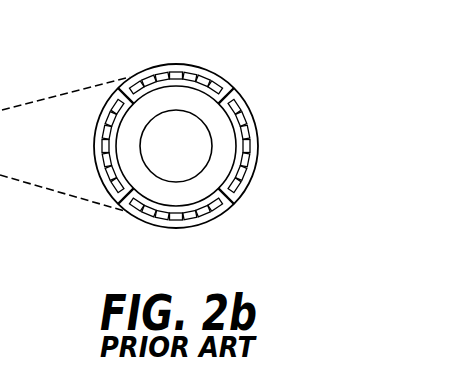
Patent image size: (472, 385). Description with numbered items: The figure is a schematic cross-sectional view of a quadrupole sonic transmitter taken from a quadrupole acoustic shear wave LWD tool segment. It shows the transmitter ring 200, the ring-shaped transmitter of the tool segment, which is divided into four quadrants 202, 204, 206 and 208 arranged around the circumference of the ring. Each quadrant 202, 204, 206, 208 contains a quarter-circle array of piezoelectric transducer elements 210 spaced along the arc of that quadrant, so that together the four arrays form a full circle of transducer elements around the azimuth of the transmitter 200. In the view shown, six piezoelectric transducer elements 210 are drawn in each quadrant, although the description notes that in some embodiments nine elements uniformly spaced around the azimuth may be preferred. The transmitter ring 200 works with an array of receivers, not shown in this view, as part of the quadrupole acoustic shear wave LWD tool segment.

The transmitter ring 200 is at (261, 148).
The quadrant 202 is at (174, 73).
The quadrant 204 is at (242, 187).
The quadrant 206 is at (173, 221).
The quadrant 208 is at (102, 152).
The piezoelectric transducer elements 210 is at (246, 122).